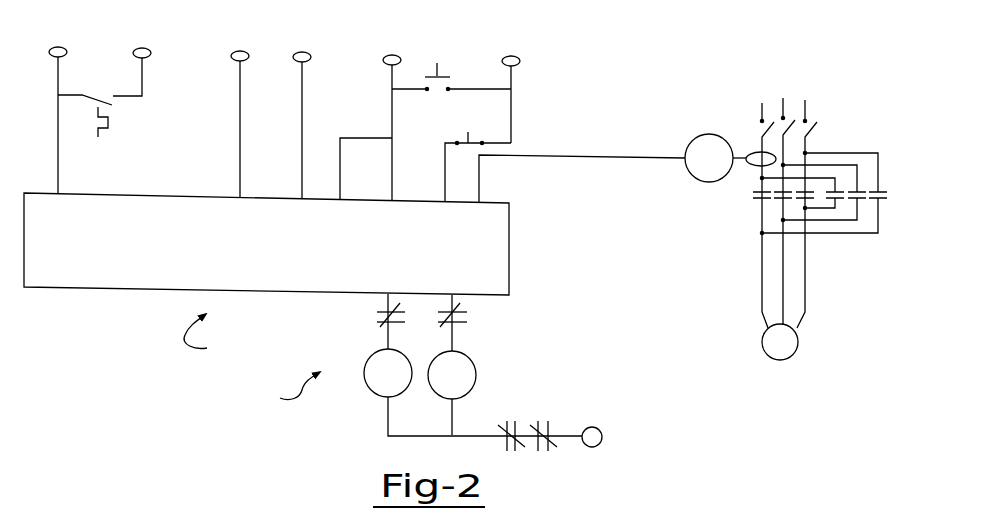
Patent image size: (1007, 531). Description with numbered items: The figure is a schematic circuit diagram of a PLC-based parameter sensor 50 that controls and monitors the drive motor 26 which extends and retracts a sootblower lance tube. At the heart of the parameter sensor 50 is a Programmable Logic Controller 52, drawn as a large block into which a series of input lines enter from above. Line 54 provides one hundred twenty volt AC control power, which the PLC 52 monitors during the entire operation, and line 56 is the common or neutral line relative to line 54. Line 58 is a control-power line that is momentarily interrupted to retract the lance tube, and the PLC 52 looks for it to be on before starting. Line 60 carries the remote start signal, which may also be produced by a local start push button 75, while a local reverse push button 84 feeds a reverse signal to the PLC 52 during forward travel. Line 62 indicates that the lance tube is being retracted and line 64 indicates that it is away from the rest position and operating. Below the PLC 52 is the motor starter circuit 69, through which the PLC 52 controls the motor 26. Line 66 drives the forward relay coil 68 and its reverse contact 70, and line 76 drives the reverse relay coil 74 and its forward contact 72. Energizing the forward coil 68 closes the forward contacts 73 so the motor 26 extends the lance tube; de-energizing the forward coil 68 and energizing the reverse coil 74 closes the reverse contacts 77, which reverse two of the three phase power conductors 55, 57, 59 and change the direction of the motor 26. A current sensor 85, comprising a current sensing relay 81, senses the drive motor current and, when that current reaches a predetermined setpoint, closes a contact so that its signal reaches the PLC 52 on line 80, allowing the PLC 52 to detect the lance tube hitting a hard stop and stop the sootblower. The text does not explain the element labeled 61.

The drive motor 26 is at (797, 342).
The parameter sensor 50 is at (177, 345).
The Programmable Logic Controller 52 is at (98, 270).
The line 54 is at (98, 104).
The three phase power conductor 55 is at (751, 203).
The line 56 is at (563, 434).
The three phase power conductor 57 is at (786, 197).
The line 58 is at (516, 82).
The three phase power conductor 59 is at (819, 203).
The line 60 is at (375, 110).
The contactor power leads 61 is at (813, 133).
The line 62 is at (241, 107).
The line 64 is at (307, 108).
The line 66 is at (387, 300).
The forward relay coil 68 is at (375, 390).
The motor starter circuit 69 is at (285, 398).
The reverse contact 70 is at (378, 321).
The forward contact 72 is at (467, 322).
The forward contacts 73 is at (771, 204).
The reverse relay coil 74 is at (473, 375).
The local start push button 75 is at (451, 62).
The line 76 is at (458, 300).
The reverse contacts 77 is at (860, 203).
The line 80 is at (605, 155).
The current sensing relay 81 is at (705, 140).
The local reverse push button 84 is at (478, 151).
The current sensor 85 is at (680, 184).